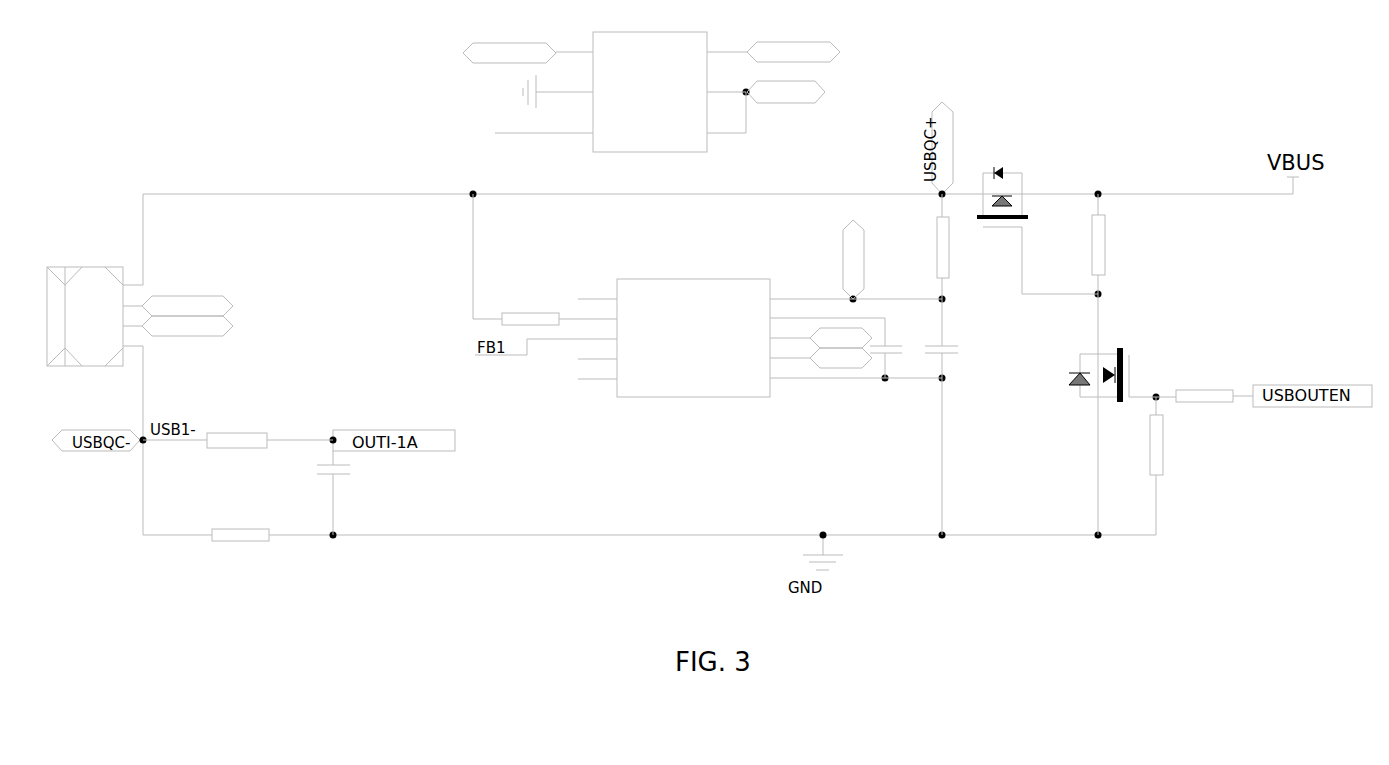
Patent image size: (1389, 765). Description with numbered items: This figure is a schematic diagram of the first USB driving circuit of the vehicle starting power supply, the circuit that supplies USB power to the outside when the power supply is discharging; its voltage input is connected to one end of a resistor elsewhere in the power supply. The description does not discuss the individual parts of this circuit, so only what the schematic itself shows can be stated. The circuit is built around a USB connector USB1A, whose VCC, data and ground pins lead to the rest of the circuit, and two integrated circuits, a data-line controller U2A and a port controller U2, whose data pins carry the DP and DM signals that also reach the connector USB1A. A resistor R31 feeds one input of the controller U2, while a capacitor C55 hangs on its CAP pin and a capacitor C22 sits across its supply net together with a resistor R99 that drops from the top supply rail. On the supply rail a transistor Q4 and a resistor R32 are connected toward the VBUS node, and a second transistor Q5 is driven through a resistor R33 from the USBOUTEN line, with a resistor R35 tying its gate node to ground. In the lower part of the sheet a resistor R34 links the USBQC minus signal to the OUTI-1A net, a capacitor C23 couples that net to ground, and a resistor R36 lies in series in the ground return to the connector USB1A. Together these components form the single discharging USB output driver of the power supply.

The USB 2.0 connector USB1A is at (133, 313).
The USB data line controller IC (IP2161) U2A is at (651, 92).
The charging port controller IC (F75293AM) U2 is at (760, 320).
The resistor R31 is at (545, 259).
The capacitor C55 is at (899, 348).
The capacitor C22 is at (963, 417).
The resistor R99 is at (965, 246).
The transistor Q4 is at (1037, 213).
The resistor R32 is at (1119, 364).
The transistor Q5 is at (1113, 364).
The resistor R33 is at (1204, 384).
The resistor R35 is at (1177, 466).
The resistor R34 is at (238, 428).
The capacitor C23 is at (356, 493).
The resistor R36 is at (238, 522).